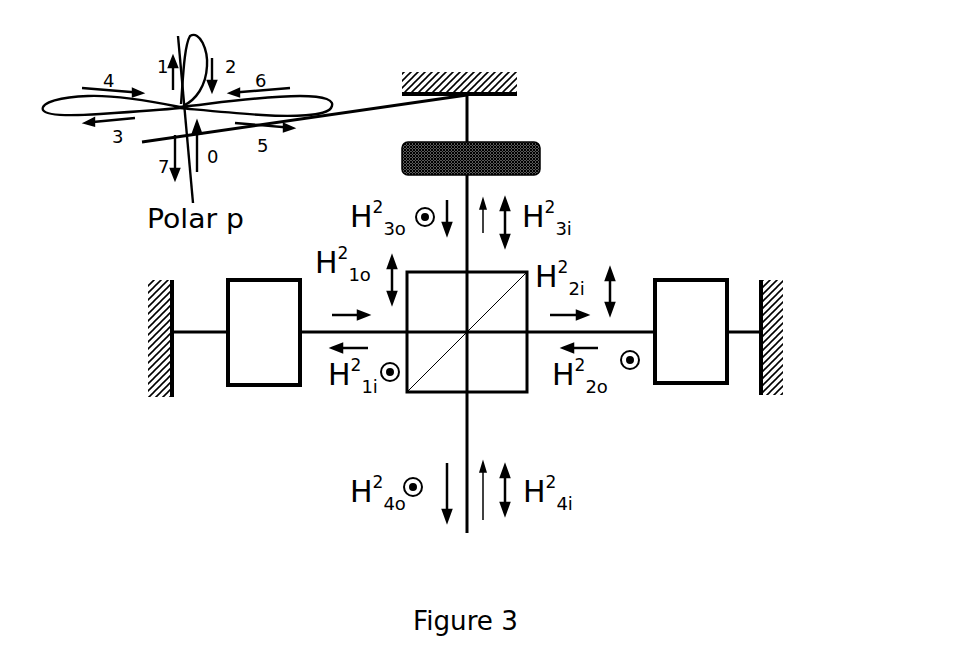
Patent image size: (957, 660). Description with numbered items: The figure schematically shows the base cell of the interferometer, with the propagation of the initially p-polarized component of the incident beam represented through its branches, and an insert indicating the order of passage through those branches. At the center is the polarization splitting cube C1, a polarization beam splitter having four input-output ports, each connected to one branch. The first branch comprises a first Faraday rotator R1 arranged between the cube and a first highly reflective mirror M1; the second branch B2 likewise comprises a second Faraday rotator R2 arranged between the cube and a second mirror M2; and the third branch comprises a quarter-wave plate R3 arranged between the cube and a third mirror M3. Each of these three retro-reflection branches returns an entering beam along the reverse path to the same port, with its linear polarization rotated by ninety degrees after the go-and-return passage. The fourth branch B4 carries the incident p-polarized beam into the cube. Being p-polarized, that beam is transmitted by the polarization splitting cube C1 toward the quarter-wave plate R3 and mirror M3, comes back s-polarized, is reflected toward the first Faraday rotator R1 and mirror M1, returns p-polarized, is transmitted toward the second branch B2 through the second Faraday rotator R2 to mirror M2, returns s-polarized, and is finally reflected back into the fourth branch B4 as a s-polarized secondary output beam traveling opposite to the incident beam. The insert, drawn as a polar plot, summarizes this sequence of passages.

The first mirror M1 is at (148, 367).
The second mirror M2 is at (783, 338).
The third mirror M3 is at (517, 87).
The first Faraday rotator R1 is at (282, 388).
The second Faraday rotator R2 is at (680, 383).
The quarter-wave plate R3 is at (540, 165).
The polarization splitting cube C1 is at (490, 392).
The second branch B2 is at (747, 330).
The fourth branch B4 is at (467, 533).